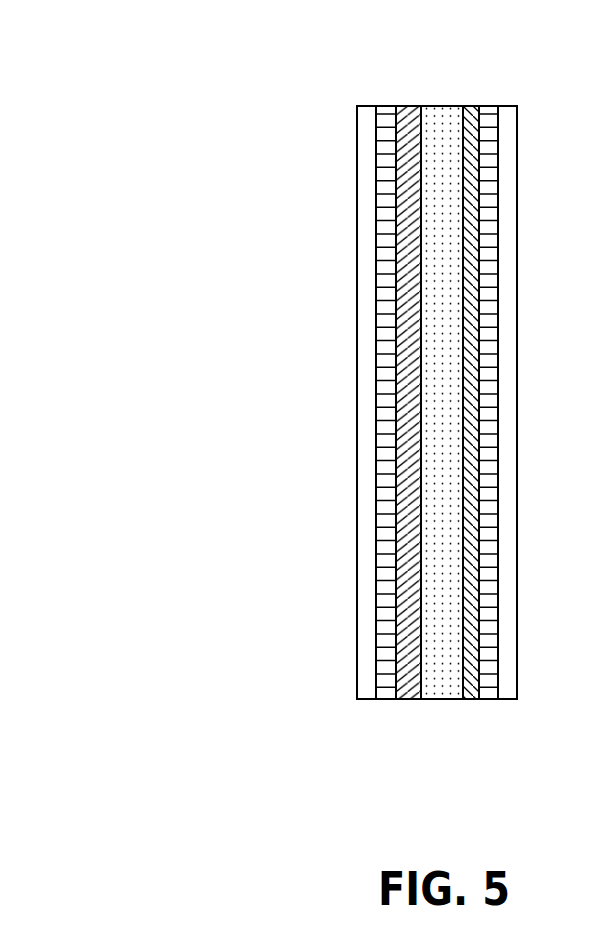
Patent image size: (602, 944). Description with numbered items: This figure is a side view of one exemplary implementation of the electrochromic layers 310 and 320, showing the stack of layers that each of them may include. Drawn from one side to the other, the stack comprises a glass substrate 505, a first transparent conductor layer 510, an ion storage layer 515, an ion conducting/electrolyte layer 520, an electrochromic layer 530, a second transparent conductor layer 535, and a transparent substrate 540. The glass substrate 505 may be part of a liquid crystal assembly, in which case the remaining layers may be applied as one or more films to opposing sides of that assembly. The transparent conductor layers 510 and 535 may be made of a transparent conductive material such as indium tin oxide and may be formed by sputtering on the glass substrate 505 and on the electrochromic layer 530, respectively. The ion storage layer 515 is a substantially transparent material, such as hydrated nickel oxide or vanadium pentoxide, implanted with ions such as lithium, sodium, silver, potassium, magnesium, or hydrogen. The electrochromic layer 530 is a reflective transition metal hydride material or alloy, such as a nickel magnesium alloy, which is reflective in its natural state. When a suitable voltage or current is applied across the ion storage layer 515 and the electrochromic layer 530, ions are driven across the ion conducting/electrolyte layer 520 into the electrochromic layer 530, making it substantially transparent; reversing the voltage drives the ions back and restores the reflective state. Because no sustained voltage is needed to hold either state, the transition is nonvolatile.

The electrochromic layer 310 is at (304, 389).
The electrochromic layer 320 is at (253, 177).
The glass substrate 505 is at (362, 236).
The first transparent conductor layer 510 is at (389, 688).
The ion storage layer 515 is at (410, 112).
The ion conducting/electrolyte layer 520 is at (448, 110).
The electrochromic layer 530 is at (474, 677).
The second transparent conductor layer 535 is at (492, 110).
The transparent substrate 540 is at (510, 152).